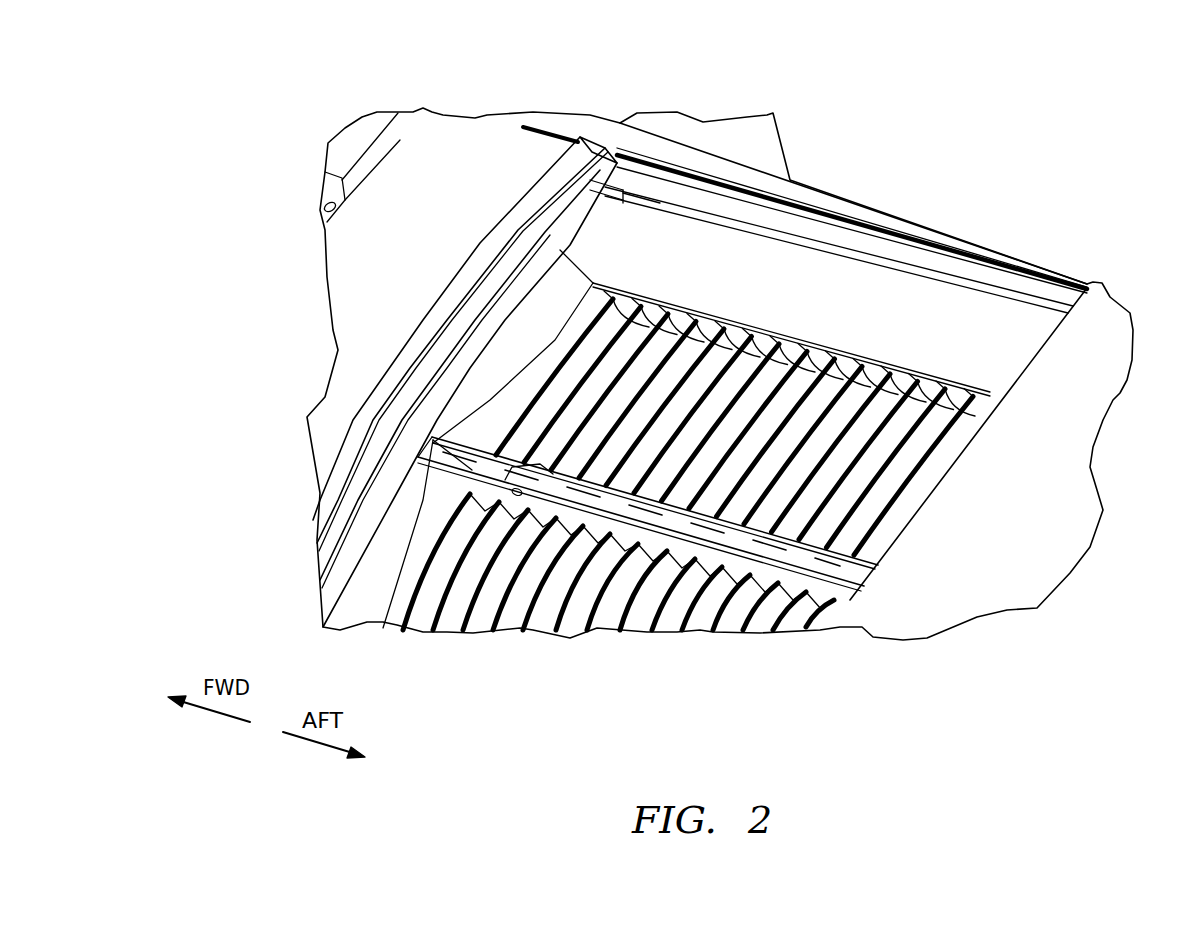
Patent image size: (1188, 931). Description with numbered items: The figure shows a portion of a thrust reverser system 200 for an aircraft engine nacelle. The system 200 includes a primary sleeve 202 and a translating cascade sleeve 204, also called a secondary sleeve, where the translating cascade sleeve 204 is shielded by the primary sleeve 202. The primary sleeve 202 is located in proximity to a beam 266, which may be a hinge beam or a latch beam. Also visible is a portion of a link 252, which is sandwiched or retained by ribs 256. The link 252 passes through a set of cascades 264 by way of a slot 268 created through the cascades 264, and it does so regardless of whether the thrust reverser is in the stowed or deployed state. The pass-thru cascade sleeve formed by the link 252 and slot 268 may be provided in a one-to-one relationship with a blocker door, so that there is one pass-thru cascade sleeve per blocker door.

The thrust reverser system 200 is at (720, 337).
The primary sleeve 202 is at (1082, 360).
The translating cascade sleeve 204 is at (773, 223).
The link 252 is at (535, 493).
The ribs 256 is at (482, 490).
The cascades 264 is at (847, 438).
The beam 266 is at (827, 190).
The slot 268 is at (582, 500).